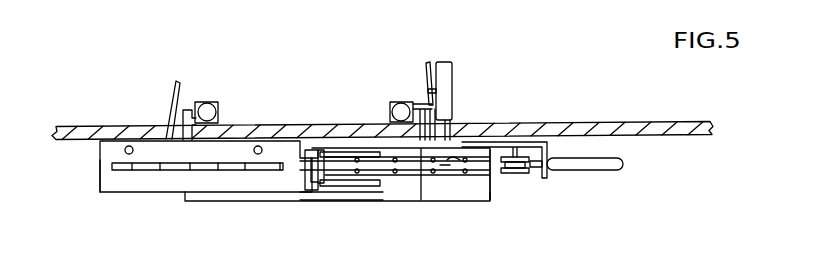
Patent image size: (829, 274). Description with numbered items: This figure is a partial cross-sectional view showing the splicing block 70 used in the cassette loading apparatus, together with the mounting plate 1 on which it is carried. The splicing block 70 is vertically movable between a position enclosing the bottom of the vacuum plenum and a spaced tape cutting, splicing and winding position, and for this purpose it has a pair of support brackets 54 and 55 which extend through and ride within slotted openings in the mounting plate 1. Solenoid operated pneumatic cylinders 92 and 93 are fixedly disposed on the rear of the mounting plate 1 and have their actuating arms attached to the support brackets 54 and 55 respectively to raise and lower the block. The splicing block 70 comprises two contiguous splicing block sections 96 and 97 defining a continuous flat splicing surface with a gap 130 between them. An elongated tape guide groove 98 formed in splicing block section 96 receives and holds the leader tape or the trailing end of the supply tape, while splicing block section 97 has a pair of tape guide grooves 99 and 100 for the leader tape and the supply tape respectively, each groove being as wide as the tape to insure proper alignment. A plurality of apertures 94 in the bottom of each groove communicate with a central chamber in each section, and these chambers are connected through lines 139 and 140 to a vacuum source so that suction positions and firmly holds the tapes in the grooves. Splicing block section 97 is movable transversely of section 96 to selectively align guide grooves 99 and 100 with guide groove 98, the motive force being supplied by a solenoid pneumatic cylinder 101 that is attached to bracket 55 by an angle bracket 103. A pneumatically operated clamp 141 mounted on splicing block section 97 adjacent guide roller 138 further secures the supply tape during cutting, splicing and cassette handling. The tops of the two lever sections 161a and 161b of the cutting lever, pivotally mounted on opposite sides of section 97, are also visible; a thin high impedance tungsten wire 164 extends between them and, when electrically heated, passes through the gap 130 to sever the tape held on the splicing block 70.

The mounting plate 1 is at (80, 125).
The line 139 is at (173, 96).
The support bracket 54 is at (188, 112).
The solenoid operated pneumatic cylinder 92 is at (215, 104).
The solenoid operated pneumatic cylinder 93 is at (390, 108).
The support bracket 55 is at (407, 106).
The line 140 is at (429, 62).
The solenoid pneumatic cylinder 101 is at (452, 70).
The angle bracket 103 is at (435, 92).
The lever section 161b is at (313, 147).
The splicing block section 96 is at (95, 181).
The splicing block 70 is at (137, 195).
The apertures 94 is at (190, 168).
The tape guide groove 98 is at (230, 170).
The wire 164 is at (320, 174).
The gap 130 is at (320, 203).
The lever section 161a is at (366, 190).
The tape guide groove 100 is at (453, 160).
The tape guide groove 99 is at (444, 166).
The splicing block section 97 is at (493, 183).
The guide roller 138 is at (522, 173).
The pneumatically operated clamp 141 is at (548, 180).